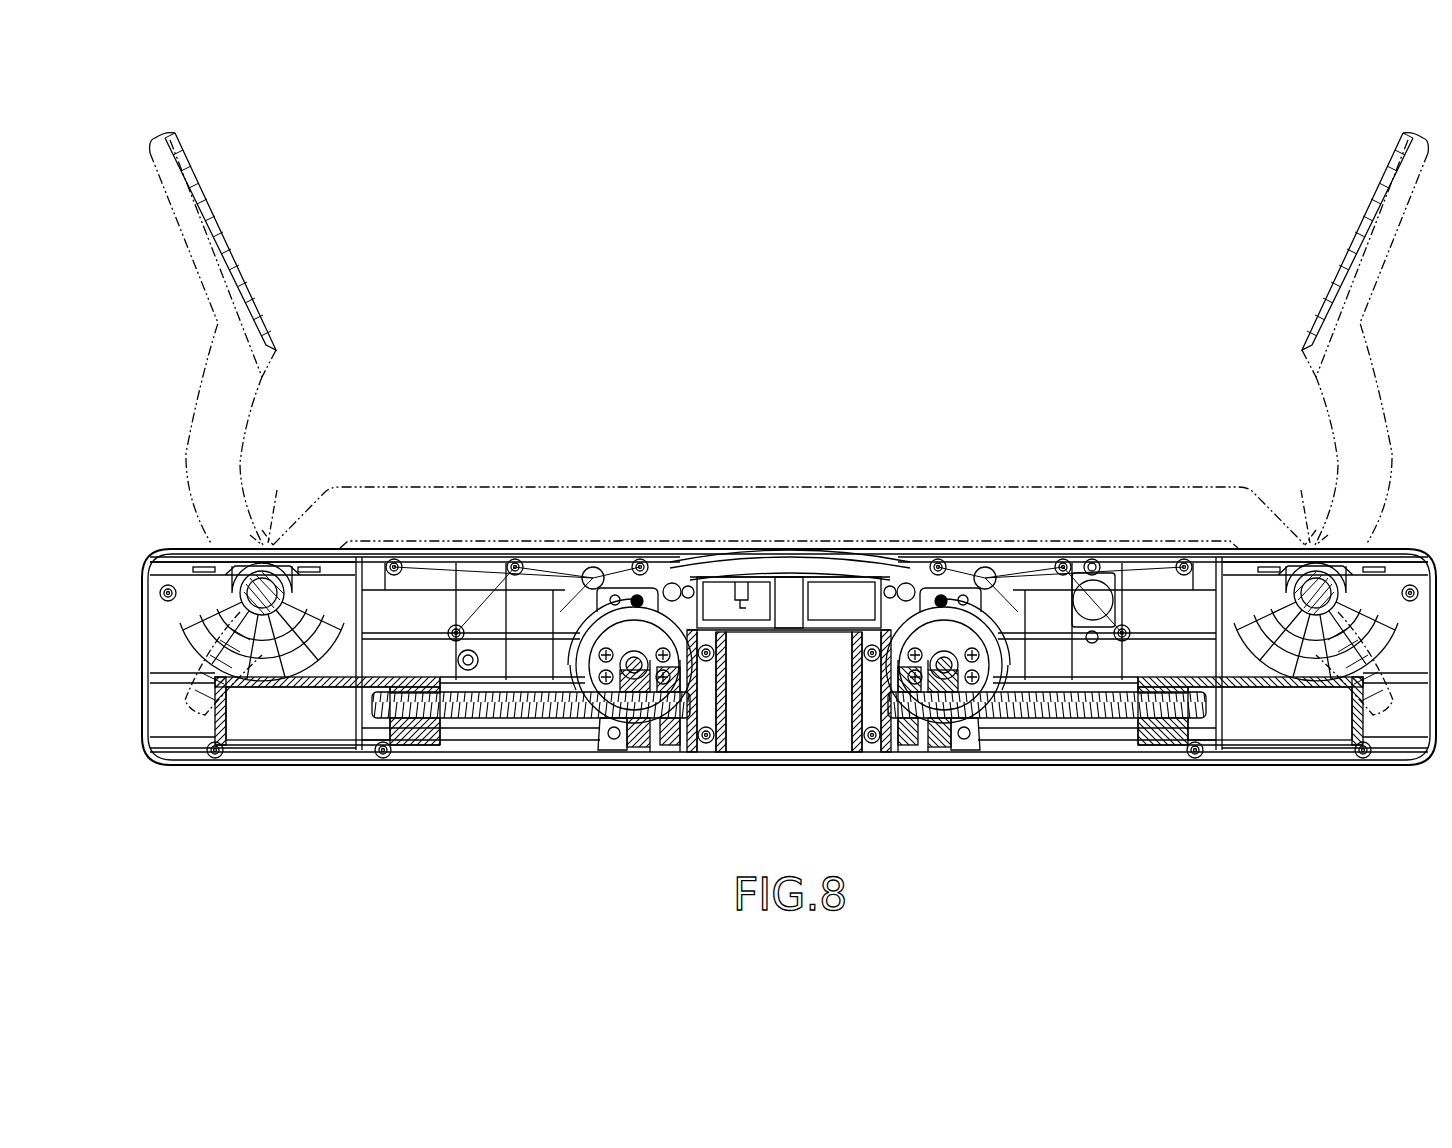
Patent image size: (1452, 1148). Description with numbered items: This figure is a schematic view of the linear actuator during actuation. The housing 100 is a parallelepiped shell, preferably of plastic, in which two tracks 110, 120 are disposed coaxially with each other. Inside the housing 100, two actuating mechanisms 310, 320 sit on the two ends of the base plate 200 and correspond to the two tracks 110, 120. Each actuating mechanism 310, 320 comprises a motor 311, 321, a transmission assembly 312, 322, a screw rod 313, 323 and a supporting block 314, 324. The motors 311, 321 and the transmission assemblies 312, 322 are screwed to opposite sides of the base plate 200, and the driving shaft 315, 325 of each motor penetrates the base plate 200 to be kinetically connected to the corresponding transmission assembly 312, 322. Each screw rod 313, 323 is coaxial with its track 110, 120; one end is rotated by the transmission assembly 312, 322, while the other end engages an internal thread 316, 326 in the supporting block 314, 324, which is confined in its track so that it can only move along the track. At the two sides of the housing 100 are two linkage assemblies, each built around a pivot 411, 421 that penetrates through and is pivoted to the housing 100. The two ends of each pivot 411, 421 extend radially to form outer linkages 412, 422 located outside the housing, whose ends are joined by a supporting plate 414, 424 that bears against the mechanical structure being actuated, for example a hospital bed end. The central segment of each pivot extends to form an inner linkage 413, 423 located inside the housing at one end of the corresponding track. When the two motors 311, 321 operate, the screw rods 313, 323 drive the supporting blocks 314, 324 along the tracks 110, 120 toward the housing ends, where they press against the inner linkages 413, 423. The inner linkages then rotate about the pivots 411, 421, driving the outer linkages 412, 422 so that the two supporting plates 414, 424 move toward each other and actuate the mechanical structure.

The housing 100 is at (793, 546).
The track 110 is at (475, 742).
The track 120 is at (1100, 742).
The base plate 200 is at (788, 742).
The actuating mechanism 310 is at (608, 748).
The motor 311 is at (568, 580).
The transmission assembly 312 is at (642, 750).
The screw rod 313 is at (508, 742).
The supporting block 314 is at (413, 750).
The driving shaft 315 is at (634, 652).
The internal thread 316 is at (358, 752).
The actuating mechanism 320 is at (968, 748).
The motor 321 is at (1002, 598).
The transmission assembly 322 is at (936, 750).
The screw rod 323 is at (1063, 742).
The supporting block 324 is at (1162, 750).
The driving shaft 325 is at (944, 652).
The internal thread 326 is at (1218, 752).
The pivot 411 is at (277, 506).
The outer linkage 412 is at (240, 427).
The inner linkage 413 is at (178, 768).
The supporting plate 414 is at (222, 241).
The pivot 421 is at (1304, 506).
The outer linkage 422 is at (1338, 427).
The inner linkage 423 is at (1402, 768).
The supporting plate 424 is at (1356, 241).